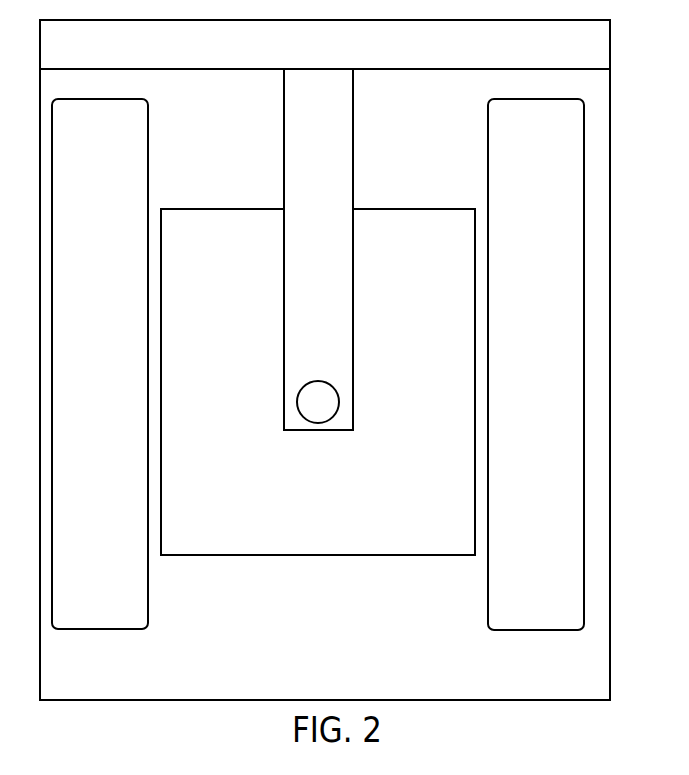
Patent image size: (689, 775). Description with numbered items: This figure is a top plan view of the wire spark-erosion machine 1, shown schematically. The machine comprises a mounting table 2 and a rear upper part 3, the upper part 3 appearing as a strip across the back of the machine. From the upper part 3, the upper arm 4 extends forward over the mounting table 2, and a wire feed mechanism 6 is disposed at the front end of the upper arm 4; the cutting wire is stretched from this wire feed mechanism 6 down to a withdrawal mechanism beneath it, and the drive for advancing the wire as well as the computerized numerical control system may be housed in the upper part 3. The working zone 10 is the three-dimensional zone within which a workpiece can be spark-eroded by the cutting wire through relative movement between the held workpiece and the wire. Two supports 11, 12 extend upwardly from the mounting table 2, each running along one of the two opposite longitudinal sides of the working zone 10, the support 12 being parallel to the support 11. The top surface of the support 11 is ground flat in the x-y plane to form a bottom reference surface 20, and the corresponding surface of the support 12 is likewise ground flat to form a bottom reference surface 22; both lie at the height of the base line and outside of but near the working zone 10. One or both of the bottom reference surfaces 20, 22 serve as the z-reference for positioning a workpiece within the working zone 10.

The wire spark-erosion machine 1 is at (609, 163).
The mounting table 2 is at (602, 659).
The rear upper part 3 is at (604, 54).
The upper arm 4 is at (352, 139).
The wire feed mechanism 6 is at (322, 381).
The working zone 10 is at (448, 556).
The support 11 is at (53, 234).
The support 12 is at (584, 241).
The bottom reference surface 20 is at (62, 316).
The bottom reference surface 22 is at (572, 336).